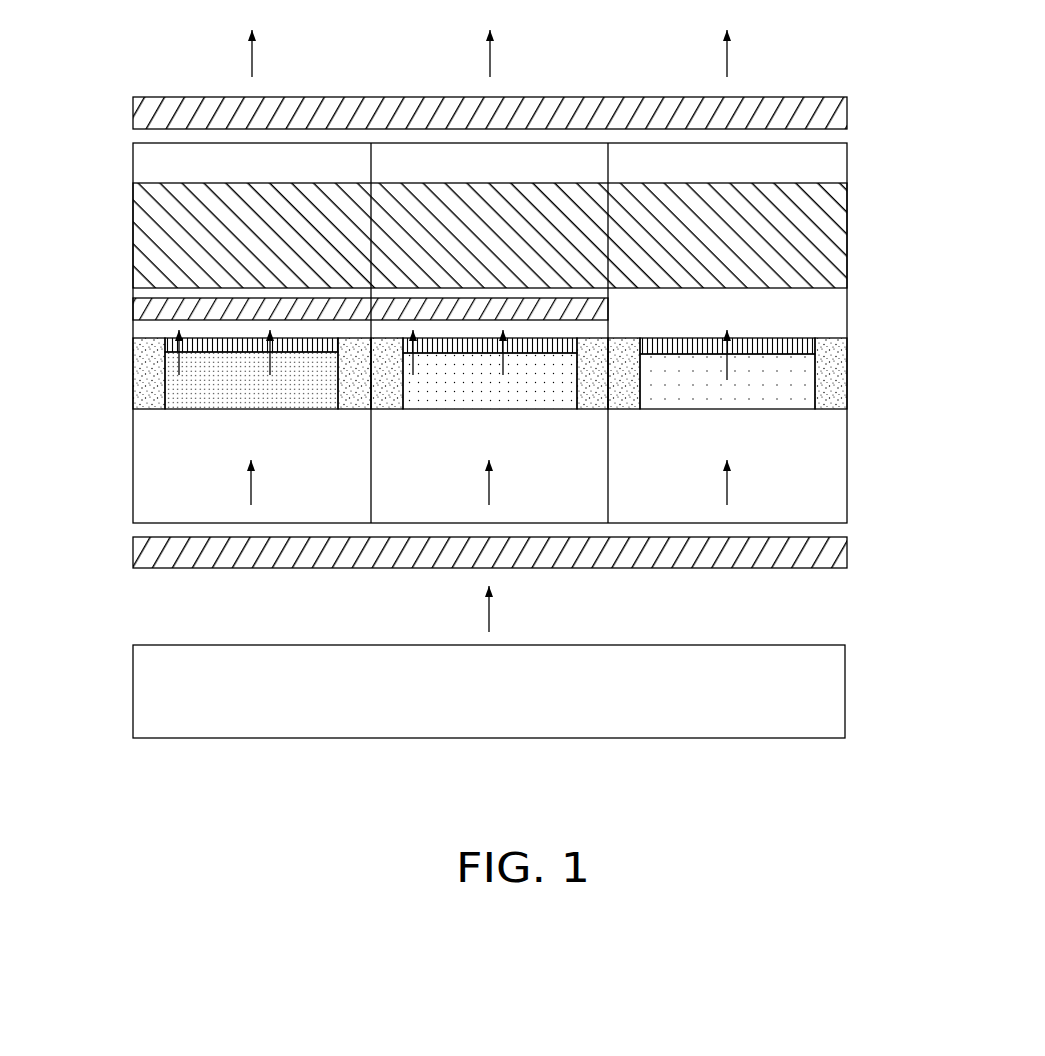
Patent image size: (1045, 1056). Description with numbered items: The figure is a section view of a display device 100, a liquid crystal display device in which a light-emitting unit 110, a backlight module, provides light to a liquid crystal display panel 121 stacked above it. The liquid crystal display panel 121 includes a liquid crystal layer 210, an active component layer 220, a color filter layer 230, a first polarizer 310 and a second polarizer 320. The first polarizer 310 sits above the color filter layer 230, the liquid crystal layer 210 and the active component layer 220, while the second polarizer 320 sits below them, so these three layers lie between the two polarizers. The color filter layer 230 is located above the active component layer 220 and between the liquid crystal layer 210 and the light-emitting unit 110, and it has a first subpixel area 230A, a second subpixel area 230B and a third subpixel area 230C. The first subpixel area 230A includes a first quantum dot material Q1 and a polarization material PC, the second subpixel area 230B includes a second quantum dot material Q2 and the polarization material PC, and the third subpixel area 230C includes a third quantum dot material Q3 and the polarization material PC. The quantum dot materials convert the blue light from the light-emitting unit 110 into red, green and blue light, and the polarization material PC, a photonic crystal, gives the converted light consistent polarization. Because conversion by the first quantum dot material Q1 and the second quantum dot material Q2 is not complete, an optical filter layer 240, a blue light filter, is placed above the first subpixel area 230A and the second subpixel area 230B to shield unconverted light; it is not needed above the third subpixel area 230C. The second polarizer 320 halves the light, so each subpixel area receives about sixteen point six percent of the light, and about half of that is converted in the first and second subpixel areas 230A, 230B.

The display device 100 is at (486, 417).
The light-emitting unit 110 is at (837, 700).
The liquid crystal display panel 121 is at (112, 98).
The first polarizer 310 is at (838, 117).
The liquid crystal layer 210 is at (847, 187).
The optical filter layer 240 is at (142, 313).
The color filter layer 230 is at (516, 391).
The first subpixel area 230A is at (371, 408).
The second subpixel area 230B is at (608, 408).
The third subpixel area 230C is at (847, 338).
The active component layer 220 is at (847, 409).
The second polarizer 320 is at (838, 559).
The polarization material PC is at (160, 340).
The first quantum dot material Q1 is at (165, 397).
The second quantum dot material Q2 is at (562, 397).
The third quantum dot material Q3 is at (790, 405).